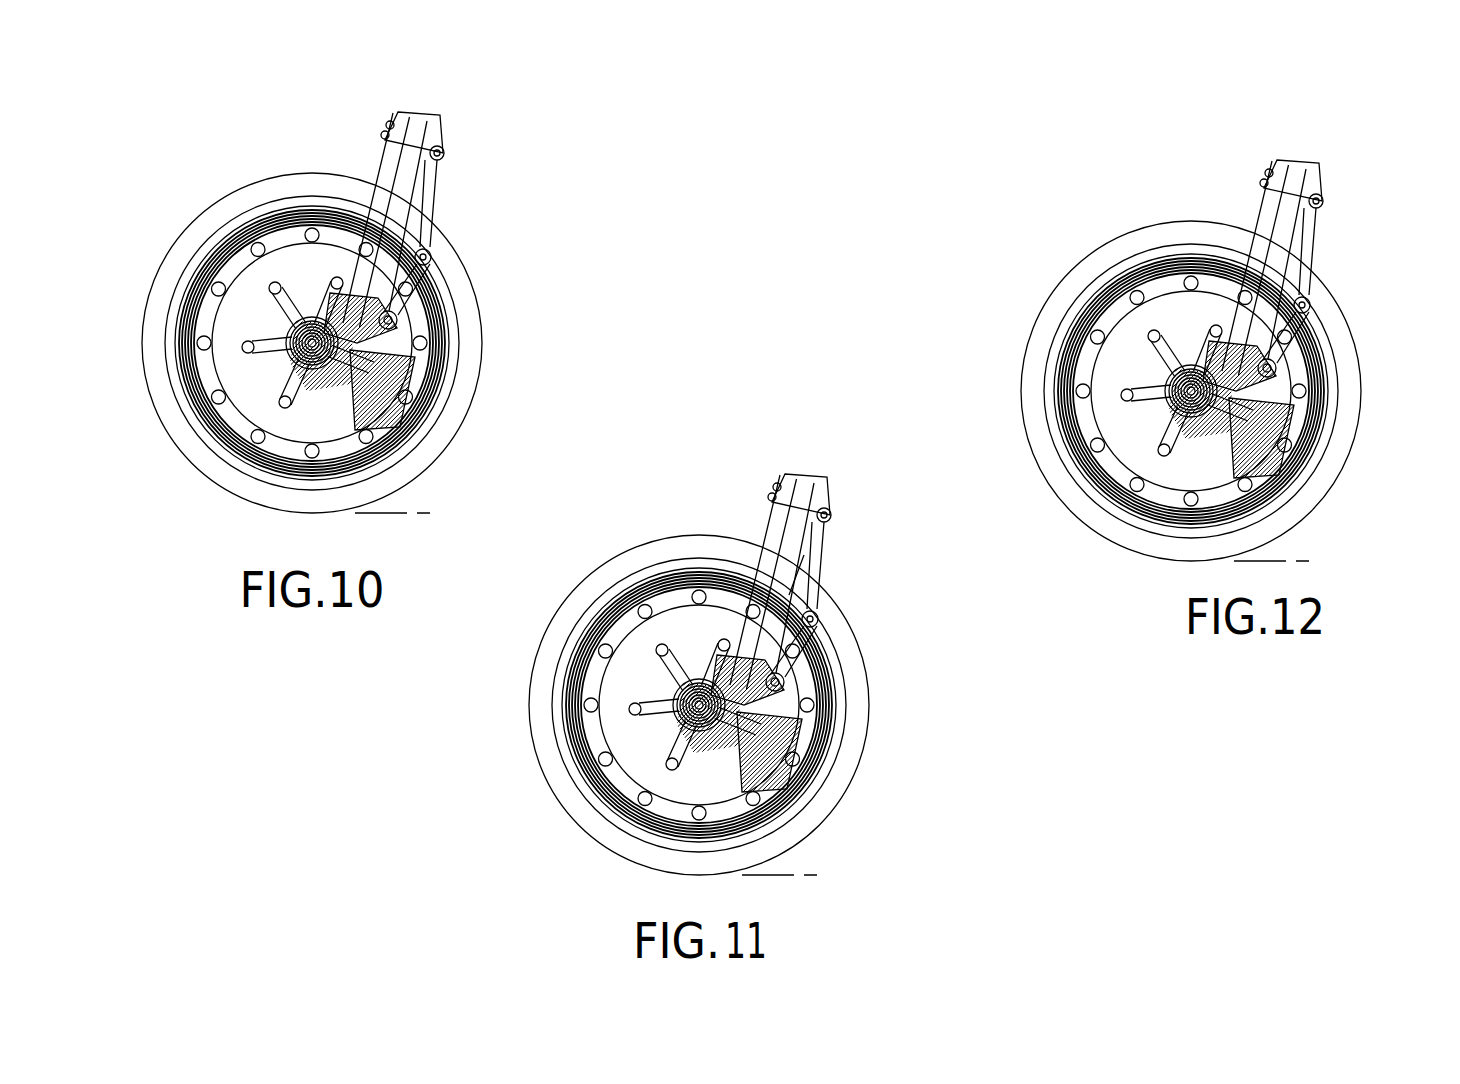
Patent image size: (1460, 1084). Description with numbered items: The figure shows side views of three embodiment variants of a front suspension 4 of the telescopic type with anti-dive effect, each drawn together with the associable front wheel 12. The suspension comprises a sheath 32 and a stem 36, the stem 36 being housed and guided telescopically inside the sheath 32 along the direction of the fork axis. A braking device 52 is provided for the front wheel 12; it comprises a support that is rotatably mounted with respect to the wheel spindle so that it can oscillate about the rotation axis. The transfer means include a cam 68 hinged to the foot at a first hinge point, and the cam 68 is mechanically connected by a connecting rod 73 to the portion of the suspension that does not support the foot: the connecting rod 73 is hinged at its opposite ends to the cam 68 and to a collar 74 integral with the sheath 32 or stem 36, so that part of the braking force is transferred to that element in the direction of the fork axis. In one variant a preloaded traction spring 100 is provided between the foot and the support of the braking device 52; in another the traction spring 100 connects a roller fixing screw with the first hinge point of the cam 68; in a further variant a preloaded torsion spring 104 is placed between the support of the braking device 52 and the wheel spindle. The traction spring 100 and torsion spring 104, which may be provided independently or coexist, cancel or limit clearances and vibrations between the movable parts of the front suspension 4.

In FIG. 10, the front suspension 4 is at (205, 140).
In FIG. 11, the front suspension 4 is at (748, 422).
In FIG. 12, the front suspension 4 is at (1088, 125).
In FIG. 10, the front wheel 12 is at (433, 443).
In FIG. 11, the front wheel 12 is at (568, 800).
In FIG. 12, the front wheel 12 is at (1037, 375).
In FIG. 10, the sheath 32 is at (378, 182).
In FIG. 11, the sheath 32 is at (763, 550).
In FIG. 12, the sheath 32 is at (1257, 232).
In FIG. 10, the stem 36 is at (340, 286).
In FIG. 11, the stem 36 is at (737, 645).
In FIG. 12, the stem 36 is at (1224, 320).
In FIG. 10, the braking device 52 is at (415, 390).
In FIG. 11, the braking device 52 is at (815, 772).
In FIG. 12, the braking device 52 is at (1294, 438).
In FIG. 10, the cam 68 is at (430, 264).
In FIG. 11, the cam 68 is at (822, 650).
In FIG. 12, the cam 68 is at (1306, 316).
In FIG. 10, the connecting rod 73 is at (437, 208).
In FIG. 11, the connecting rod 73 is at (824, 568).
In FIG. 12, the connecting rod 73 is at (1318, 244).
In FIG. 10, the collar 74 is at (407, 140).
In FIG. 11, the collar 74 is at (795, 500).
In FIG. 12, the collar 74 is at (1290, 187).
In FIG. 10, the traction spring 100 is at (305, 352).
In FIG. 11, the traction spring 100 is at (786, 600).
In FIG. 12, the torsion spring 104 is at (1145, 350).